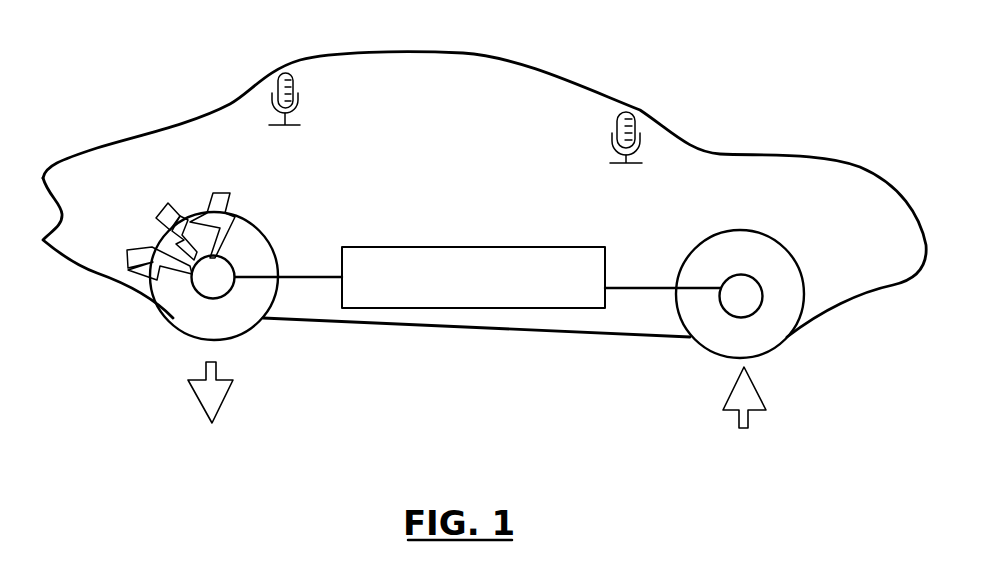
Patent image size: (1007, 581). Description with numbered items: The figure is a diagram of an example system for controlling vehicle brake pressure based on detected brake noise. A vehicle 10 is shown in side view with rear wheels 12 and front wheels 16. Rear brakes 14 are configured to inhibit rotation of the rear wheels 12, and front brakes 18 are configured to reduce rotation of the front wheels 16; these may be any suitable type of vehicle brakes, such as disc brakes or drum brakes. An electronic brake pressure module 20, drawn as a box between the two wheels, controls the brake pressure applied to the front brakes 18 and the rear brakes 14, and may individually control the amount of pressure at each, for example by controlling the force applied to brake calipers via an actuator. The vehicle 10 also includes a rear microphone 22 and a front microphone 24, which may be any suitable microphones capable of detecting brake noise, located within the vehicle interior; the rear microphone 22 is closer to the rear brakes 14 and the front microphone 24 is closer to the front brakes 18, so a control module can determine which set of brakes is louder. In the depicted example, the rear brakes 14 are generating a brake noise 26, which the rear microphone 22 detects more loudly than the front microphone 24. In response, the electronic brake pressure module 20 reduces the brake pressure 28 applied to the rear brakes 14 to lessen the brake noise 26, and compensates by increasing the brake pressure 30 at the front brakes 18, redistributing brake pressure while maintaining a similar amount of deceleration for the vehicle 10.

The vehicle 10 is at (463, 53).
The rear wheels 12 is at (250, 330).
The rear brakes 14 is at (196, 291).
The front wheels 16 is at (693, 342).
The front brakes 18 is at (760, 311).
The electronic brake pressure module 20 is at (473, 247).
The rear microphone 22 is at (296, 107).
The front microphone 24 is at (612, 137).
The brake noise 26 is at (160, 207).
The brake pressure 28 is at (190, 391).
The brake pressure 30 is at (724, 398).